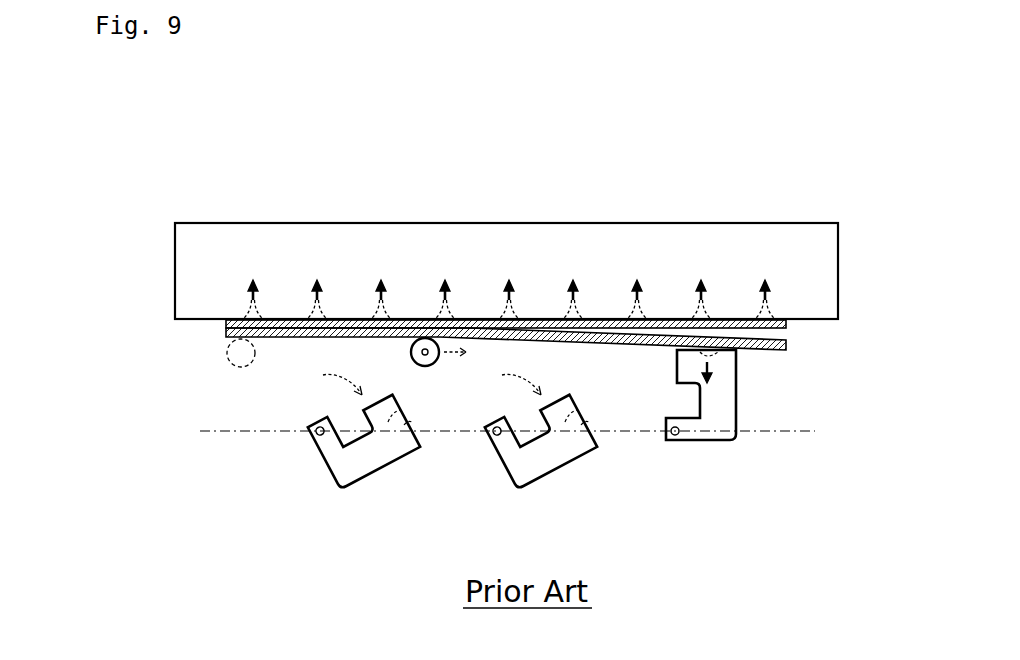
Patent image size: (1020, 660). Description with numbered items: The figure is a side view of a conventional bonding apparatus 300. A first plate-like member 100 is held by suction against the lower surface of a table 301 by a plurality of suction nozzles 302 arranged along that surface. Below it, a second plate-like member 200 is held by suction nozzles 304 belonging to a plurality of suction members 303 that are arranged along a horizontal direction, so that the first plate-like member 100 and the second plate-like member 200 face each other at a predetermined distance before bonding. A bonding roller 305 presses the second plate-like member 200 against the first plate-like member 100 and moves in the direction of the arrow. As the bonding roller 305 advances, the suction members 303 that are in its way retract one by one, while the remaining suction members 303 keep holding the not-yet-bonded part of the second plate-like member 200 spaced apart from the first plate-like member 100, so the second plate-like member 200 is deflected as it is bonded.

The bonding apparatus 300 is at (255, 177).
The table 301 is at (548, 233).
The suction nozzles 302 is at (768, 316).
The first plate-like member 100 is at (788, 325).
The second plate-like member 200 is at (788, 350).
The suction members 303 is at (370, 473).
The suction nozzles 304 is at (402, 417).
The bonding roller 305 is at (436, 365).